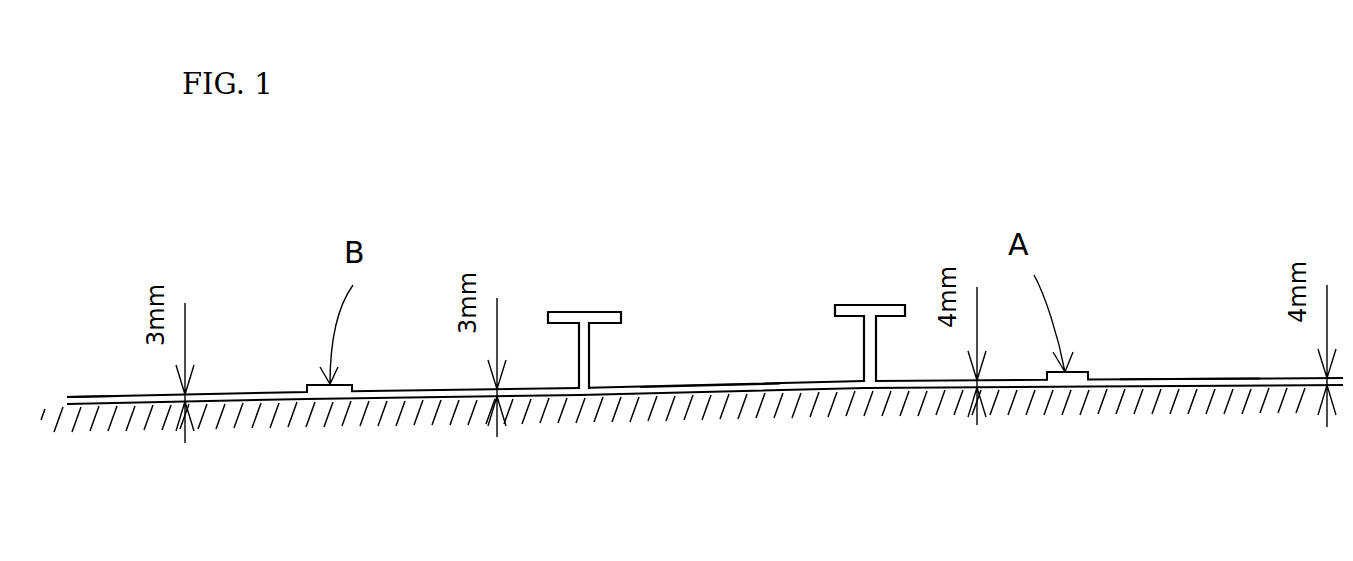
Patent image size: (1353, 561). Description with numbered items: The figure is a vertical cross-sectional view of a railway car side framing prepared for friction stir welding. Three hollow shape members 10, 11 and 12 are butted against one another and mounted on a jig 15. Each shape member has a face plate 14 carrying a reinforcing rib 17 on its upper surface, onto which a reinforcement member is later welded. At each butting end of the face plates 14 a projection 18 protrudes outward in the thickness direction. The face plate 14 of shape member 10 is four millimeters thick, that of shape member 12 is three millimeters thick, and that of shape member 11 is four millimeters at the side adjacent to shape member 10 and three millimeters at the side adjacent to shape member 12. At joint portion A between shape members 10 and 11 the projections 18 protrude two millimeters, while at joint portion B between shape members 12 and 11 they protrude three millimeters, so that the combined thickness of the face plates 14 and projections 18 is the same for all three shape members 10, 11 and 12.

The shape member 10 is at (1213, 327).
The shape member 11 is at (730, 347).
The shape member 12 is at (90, 373).
The face plate 14 is at (262, 397).
The jig 15 is at (745, 405).
The rib 17 is at (865, 305).
The projection 18 is at (313, 383).